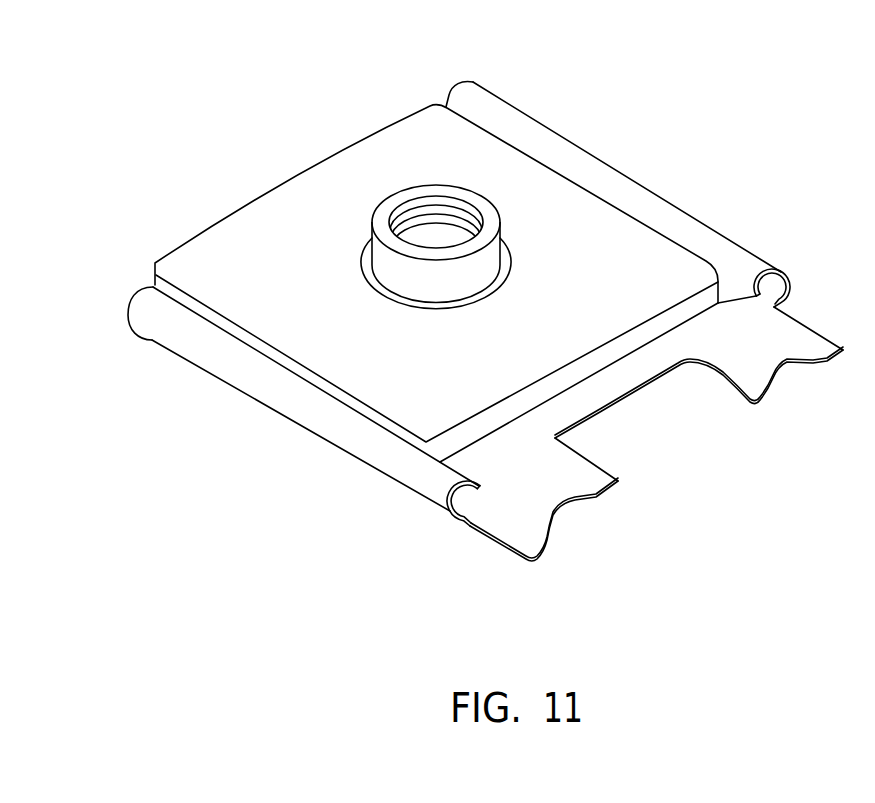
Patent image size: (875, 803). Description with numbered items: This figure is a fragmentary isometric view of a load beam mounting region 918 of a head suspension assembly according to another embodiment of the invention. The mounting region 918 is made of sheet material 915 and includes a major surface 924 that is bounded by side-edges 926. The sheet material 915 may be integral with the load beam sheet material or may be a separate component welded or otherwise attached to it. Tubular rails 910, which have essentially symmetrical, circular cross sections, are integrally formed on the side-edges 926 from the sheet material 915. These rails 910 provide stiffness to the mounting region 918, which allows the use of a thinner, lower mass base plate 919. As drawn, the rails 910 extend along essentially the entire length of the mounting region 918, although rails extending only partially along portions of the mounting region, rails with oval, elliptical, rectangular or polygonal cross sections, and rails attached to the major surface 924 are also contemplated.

The base plate 919 is at (357, 175).
The tubular rails 910 is at (438, 328).
The side-edges 926 is at (590, 150).
The major surface 924 is at (493, 458).
The sheet material 915 is at (527, 425).
The load beam mounting region 918 is at (628, 370).